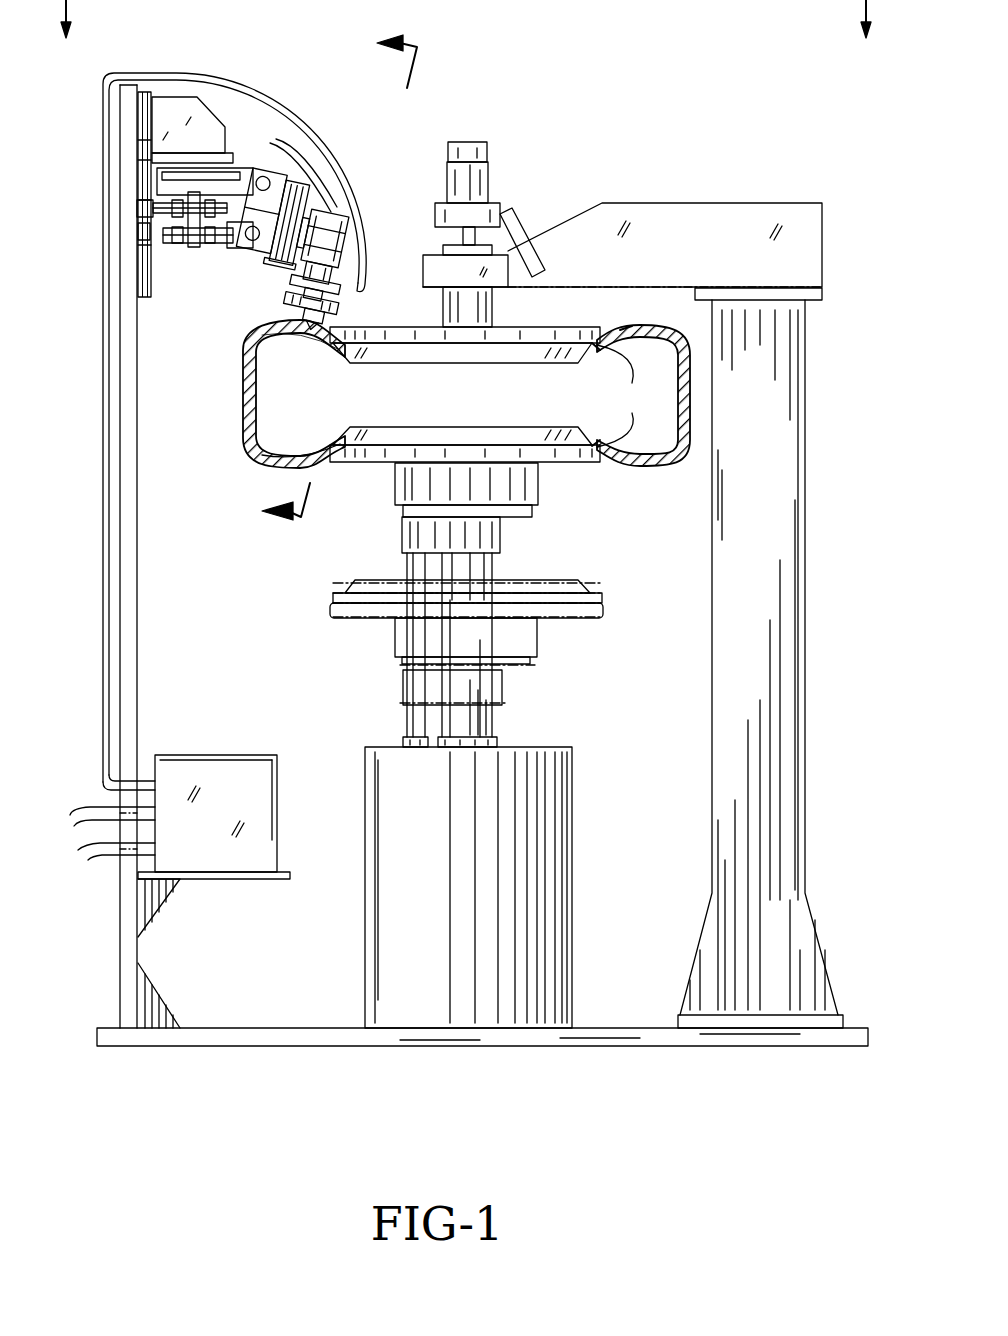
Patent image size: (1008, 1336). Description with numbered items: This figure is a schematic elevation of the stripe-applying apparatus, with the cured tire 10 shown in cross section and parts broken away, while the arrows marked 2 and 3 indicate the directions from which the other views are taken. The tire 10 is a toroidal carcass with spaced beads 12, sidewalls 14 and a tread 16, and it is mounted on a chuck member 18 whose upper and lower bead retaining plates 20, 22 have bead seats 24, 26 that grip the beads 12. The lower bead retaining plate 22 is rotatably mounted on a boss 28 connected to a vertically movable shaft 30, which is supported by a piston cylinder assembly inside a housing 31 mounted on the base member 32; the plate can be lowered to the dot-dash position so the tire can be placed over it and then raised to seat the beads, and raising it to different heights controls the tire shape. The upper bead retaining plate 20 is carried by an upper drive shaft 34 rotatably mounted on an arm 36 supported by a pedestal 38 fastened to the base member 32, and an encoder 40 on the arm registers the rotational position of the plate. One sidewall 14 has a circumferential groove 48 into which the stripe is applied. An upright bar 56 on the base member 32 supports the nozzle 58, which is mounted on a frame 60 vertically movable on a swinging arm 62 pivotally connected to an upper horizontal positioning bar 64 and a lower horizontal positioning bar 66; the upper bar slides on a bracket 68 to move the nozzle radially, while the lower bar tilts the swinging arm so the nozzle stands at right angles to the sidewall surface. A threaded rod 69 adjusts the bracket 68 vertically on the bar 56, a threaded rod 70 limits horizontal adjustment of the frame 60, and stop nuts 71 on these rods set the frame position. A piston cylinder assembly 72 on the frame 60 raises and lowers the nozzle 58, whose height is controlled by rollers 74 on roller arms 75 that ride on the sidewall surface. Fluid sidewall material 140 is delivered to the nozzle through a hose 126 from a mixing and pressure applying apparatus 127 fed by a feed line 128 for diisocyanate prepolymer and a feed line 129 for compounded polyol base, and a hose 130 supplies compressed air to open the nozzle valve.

The section line 2- 2 is at (465, 37).
The section line 3- 3 is at (329, 271).
The tire 10 is at (675, 463).
The beads 12 is at (621, 396).
The sidewalls 14 is at (652, 463).
The tread 16 is at (692, 400).
The chuck member 18 is at (560, 328).
The upper bead retaining plate 20 is at (480, 333).
The lower bead retaining plate 22 is at (388, 460).
The bead seat 24 is at (592, 343).
The bead seat 26 is at (592, 450).
The boss 28 is at (505, 485).
The vertically movable shaft 30 is at (473, 633).
The housing 31 is at (545, 847).
The base member 32 is at (213, 1032).
The upper drive shaft 34 is at (463, 318).
The arm 36 is at (673, 212).
The pedestal 38 is at (767, 668).
The encoder 40 is at (438, 203).
The circumferential groove 48 is at (623, 330).
The bar 56 is at (127, 640).
The nozzle 58 is at (340, 240).
The frame 60 is at (330, 277).
The swinging arm 62 is at (265, 175).
The upper horizontal positioning bar 64 is at (242, 177).
The lower horizontal positioning bar 66 is at (163, 232).
The bracket 68 is at (165, 113).
The threaded rod 69 is at (143, 270).
The threaded rod 70 is at (153, 208).
The stop nuts 71 is at (143, 230).
The piston cylinder assembly 72 is at (318, 198).
The rollers 74 is at (340, 316).
The roller arms 75 is at (300, 318).
The hose 126 is at (348, 150).
The mixing and pressure applying apparatus 127 is at (207, 768).
The feed line 128 is at (82, 810).
The feed line 129 is at (98, 852).
The hose 130 is at (312, 163).
The fluid sidewall material 140 is at (300, 327).